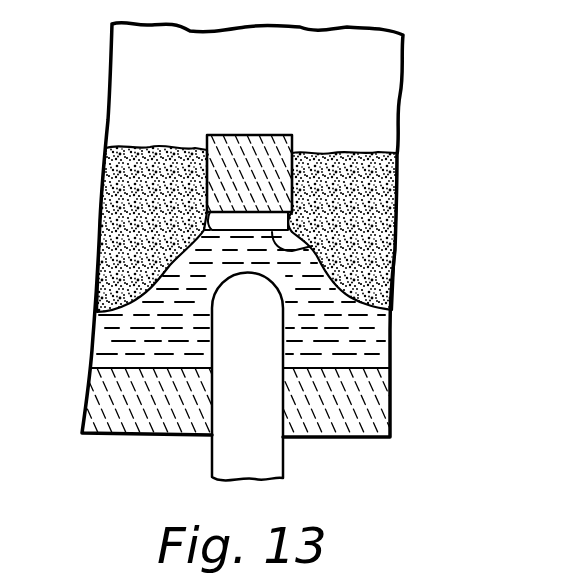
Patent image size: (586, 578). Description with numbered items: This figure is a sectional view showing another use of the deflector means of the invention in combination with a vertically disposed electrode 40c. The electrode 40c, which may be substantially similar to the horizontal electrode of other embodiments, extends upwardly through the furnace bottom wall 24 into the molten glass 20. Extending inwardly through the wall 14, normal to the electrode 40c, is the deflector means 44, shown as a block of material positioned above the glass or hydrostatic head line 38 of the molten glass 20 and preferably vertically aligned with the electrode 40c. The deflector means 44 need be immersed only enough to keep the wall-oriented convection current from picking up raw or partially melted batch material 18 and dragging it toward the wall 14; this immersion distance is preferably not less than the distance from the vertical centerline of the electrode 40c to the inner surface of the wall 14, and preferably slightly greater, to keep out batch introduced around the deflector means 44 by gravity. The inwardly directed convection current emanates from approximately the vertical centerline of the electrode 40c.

The wall 14 is at (125, 68).
The granular packing material 18 is at (356, 205).
The molten glass 20 is at (345, 336).
The furnace bottom wall 24 is at (372, 400).
The glass or hydrostatic head line 38 is at (305, 245).
The vertically disposed electrode 40c is at (285, 462).
The deflector means 44 is at (247, 137).